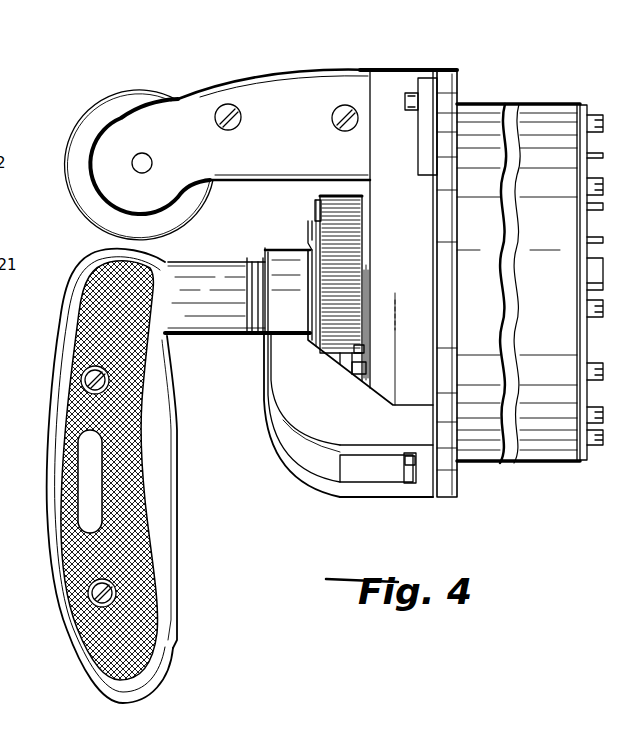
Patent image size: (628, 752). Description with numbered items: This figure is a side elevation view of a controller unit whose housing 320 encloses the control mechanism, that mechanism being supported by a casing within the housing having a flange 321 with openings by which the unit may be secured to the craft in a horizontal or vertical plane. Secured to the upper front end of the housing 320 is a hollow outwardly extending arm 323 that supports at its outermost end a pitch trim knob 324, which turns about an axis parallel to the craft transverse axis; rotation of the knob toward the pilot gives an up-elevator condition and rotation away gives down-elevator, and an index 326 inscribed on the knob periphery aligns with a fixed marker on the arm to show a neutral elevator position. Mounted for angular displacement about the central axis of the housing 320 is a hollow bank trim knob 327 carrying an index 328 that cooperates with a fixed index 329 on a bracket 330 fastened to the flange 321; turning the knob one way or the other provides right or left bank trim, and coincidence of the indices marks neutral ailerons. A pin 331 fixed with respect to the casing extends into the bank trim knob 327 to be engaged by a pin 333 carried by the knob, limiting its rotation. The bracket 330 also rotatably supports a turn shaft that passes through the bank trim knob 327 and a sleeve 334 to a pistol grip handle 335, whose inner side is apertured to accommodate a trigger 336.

The housing 320 is at (472, 467).
The flange 321 is at (457, 75).
The arm 323 is at (292, 76).
The pitch trim knob 324 is at (118, 102).
The index 326 is at (91, 163).
The bank trim knob 327 is at (355, 242).
The index 328 is at (315, 208).
The fixed index 329 is at (307, 224).
The bracket 330 is at (342, 433).
The pin 331 is at (367, 353).
The pin 333 is at (367, 372).
The sleeve 334 is at (213, 336).
The pistol grip handle 335 is at (50, 508).
The trigger 336 is at (168, 507).